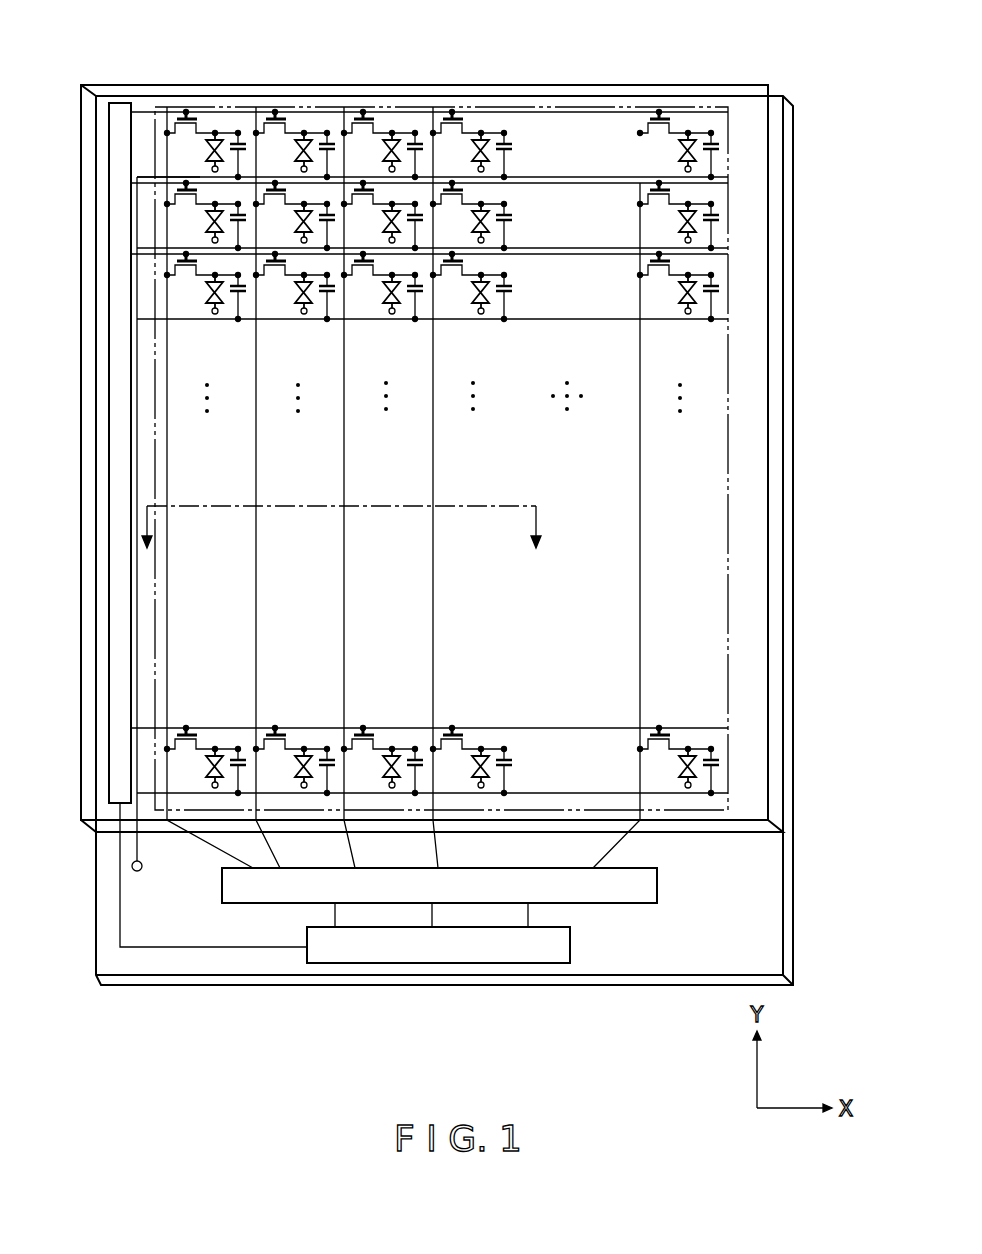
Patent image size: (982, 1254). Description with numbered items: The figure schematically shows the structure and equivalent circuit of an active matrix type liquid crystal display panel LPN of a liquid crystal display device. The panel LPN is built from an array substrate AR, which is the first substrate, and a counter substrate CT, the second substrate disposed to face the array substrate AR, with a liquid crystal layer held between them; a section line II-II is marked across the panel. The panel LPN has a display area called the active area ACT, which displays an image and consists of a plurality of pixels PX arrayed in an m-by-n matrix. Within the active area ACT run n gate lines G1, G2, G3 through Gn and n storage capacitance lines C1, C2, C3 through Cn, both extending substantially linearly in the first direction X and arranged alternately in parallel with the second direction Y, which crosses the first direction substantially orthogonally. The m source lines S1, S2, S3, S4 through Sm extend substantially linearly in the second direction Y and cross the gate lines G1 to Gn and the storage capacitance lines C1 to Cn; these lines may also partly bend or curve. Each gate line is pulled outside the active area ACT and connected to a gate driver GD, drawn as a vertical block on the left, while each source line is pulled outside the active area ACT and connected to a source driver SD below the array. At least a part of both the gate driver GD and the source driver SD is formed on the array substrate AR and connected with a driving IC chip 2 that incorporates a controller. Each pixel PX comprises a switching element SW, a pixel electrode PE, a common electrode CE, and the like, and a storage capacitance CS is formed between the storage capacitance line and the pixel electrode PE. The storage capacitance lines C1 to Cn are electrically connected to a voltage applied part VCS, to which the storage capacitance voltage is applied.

The liquid crystal display panel LPN is at (462, 492).
The gate driver GD is at (126, 103).
The pixel PX is at (259, 94).
The pixel electrode PE is at (221, 142).
The storage capacitance CS is at (242, 146).
The common electrode CE is at (212, 171).
The switching element SW is at (187, 136).
The gate line G1 is at (533, 113).
The gate line G2 is at (533, 184).
The gate line G3 is at (533, 255).
The gate line Gn is at (623, 727).
The storage capacitance line C1 is at (613, 177).
The storage capacitance line C2 is at (613, 248).
The storage capacitance line C3 is at (613, 319).
The storage capacitance line Cn is at (613, 793).
The active area ACT is at (728, 346).
The array substrate AR is at (793, 390).
The counter substrate CT is at (773, 427).
The section line II- II is at (150, 520).
The source line S1 is at (195, 837).
The source line S2 is at (274, 859).
The source line S3 is at (350, 852).
The source line S4 is at (435, 852).
The source line Sm is at (608, 852).
The voltage applied part VCS is at (139, 872).
The source driver SD is at (640, 904).
The driving IC chip 2 is at (443, 963).